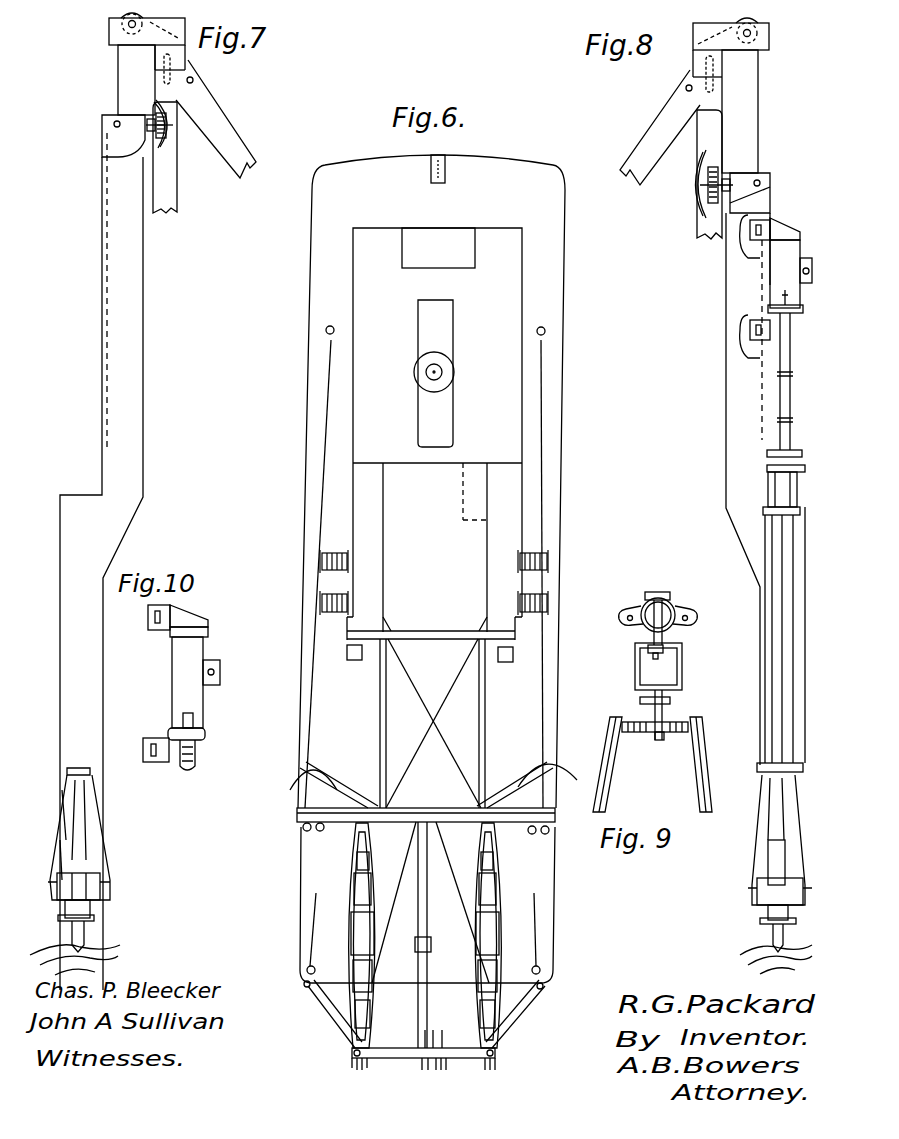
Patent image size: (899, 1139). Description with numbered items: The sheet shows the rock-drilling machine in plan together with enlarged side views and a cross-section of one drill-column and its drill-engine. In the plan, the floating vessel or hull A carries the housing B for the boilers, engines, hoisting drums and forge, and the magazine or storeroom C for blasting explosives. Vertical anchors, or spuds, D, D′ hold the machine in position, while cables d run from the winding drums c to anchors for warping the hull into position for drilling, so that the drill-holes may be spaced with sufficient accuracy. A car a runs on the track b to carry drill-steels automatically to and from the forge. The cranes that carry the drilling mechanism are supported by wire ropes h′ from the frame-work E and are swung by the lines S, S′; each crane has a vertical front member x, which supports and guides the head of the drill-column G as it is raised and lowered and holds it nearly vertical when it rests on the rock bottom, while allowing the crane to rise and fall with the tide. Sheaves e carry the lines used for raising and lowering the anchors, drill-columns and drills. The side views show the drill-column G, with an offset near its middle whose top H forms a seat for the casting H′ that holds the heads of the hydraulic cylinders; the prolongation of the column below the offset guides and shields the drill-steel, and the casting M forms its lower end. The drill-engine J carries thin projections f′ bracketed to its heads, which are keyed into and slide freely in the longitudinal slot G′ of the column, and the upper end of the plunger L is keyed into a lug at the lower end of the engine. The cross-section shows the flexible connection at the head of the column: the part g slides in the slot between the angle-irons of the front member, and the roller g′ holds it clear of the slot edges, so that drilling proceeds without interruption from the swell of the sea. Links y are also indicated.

In FIG. 6, the floating vessel or hull A is at (377, 178).
In FIG. 6, the housing B is at (370, 428).
In FIG. 6, the magazine or storeroom C is at (422, 243).
In FIG. 6, the vertical anchor or spud D is at (345, 650).
In FIG. 6, the vertical anchor or spud D′ is at (693, 43).
In FIG. 6, the frame-work E is at (413, 736).
In FIG. 7, the arm F′ is at (188, 186).
In FIG. 6, the arm F′ is at (342, 1025).
In FIG. 8, the arm F′ is at (692, 227).
In FIG. 9, the arm F′ is at (690, 780).
In FIG. 7, the drill-column G is at (148, 323).
In FIG. 8, the drill-column G is at (720, 333).
In FIG. 9, the drill-column G is at (685, 660).
In FIG. 6, the longitudinal slot G′ is at (585, 738).
In FIG. 7, the top of the offset H is at (82, 492).
In FIG. 8, the casting H′ is at (780, 482).
In FIG. 8, the drill-engine J is at (782, 282).
In FIG. 10, the drill-engine J is at (205, 693).
In FIG. 9, the drill-engine J is at (675, 603).
In FIG. 10, the plunger L is at (192, 775).
In FIG. 7, the casting M is at (92, 905).
In FIG. 8, the casting M is at (755, 912).
In FIG. 7, the post R is at (112, 100).
In FIG. 6, the post R is at (187, 45).
In FIG. 8, the post R is at (763, 107).
In FIG. 6, the line S is at (300, 953).
In FIG. 6, the line S′ is at (545, 957).
In FIG. 6, the car a is at (415, 952).
In FIG. 6, the track b is at (428, 972).
In FIG. 6, the winding drum c is at (320, 557).
In FIG. 6, the cable d is at (328, 326).
In FIG. 7, the sheave e is at (107, 26).
In FIG. 6, the sheave e is at (366, 1080).
In FIG. 8, the sheave e is at (771, 33).
In FIG. 8, the projection f′ is at (752, 232).
In FIG. 10, the projection f′ is at (142, 620).
In FIG. 9, the projection f′ is at (652, 652).
In FIG. 8, the flexible sliding connection part g is at (694, 160).
In FIG. 9, the flexible sliding connection part g is at (736, 675).
In FIG. 7, the roller g′ is at (165, 135).
In FIG. 8, the roller g′ is at (706, 188).
In FIG. 9, the roller g′ is at (640, 712).
In FIG. 6, the wire rope h′ is at (190, 80).
In FIG. 8, the set screw s is at (803, 310).
In FIG. 10, the set screw s is at (205, 733).
In FIG. 9, the set screw s is at (623, 617).
In FIG. 7, the vertical front member x is at (163, 213).
In FIG. 8, the vertical front member x is at (713, 134).
In FIG. 9, the vertical front member x is at (690, 718).
In FIG. 7, the link y is at (50, 830).
In FIG. 8, the link y is at (758, 830).